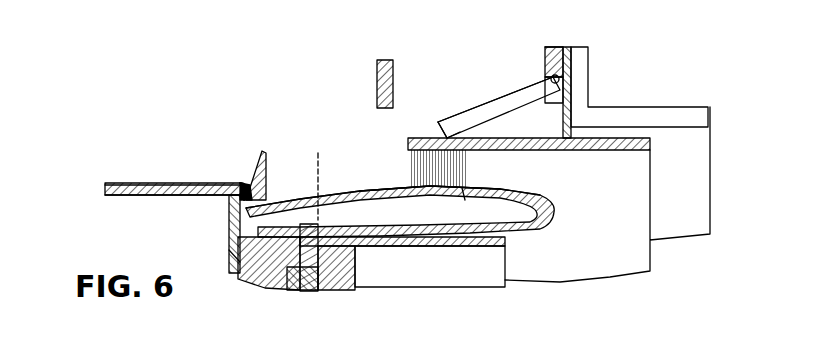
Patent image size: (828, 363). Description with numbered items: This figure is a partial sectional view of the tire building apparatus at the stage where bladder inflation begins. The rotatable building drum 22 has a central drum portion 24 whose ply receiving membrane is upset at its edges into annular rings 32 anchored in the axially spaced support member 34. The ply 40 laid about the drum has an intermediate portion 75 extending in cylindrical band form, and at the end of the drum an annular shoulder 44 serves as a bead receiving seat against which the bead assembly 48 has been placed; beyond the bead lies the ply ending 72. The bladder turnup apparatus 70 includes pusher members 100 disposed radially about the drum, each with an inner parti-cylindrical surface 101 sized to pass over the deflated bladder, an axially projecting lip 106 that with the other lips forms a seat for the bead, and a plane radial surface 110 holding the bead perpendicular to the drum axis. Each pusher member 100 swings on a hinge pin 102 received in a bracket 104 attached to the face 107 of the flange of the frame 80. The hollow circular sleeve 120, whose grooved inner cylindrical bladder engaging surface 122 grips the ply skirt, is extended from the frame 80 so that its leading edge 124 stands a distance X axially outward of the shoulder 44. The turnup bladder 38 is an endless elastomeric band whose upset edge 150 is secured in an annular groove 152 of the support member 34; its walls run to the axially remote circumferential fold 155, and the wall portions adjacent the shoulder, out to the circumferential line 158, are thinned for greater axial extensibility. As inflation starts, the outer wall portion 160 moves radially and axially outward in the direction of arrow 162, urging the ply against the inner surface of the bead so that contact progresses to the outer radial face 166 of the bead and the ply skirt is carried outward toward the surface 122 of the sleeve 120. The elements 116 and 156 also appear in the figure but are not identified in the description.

The building drum 22 is at (102, 193).
The central drum portion 24 is at (134, 196).
The annular rings 32 is at (232, 275).
The support member 34 is at (360, 275).
The turnup bladder 38 is at (453, 247).
The ply 40 is at (157, 183).
The annular shoulder 44 is at (231, 205).
The bead assembly 48 is at (243, 190).
The bladder turnup apparatus 70 is at (616, 72).
The ply ending 72 is at (402, 185).
The intermediate portion of the plies 75 is at (118, 183).
The frame 80 is at (668, 102).
The pusher member 100 is at (508, 100).
The inner parti-cylindrical surface 101 is at (438, 130).
The hinge pin 102 is at (547, 68).
The bracket 104 is at (553, 47).
The axially projecting lip 106 is at (440, 124).
The face of the frame flange 107 is at (566, 118).
The plane radial surface 110 is at (463, 112).
The stop block 116 is at (372, 72).
The sleeve 120 is at (652, 188).
The inner cylindrical bladder engaging surface 122 is at (462, 168).
The leading edge 124 is at (408, 142).
The upset edge 150 is at (273, 290).
The annular groove 152 is at (325, 291).
The circumferential fold 155 is at (556, 213).
The lower hook 156 is at (229, 250).
The circumferential line 158 is at (320, 216).
The outer wall portion 160 is at (471, 204).
The arrow 162 is at (292, 197).
The outer radial face of the bead 166 is at (270, 178).